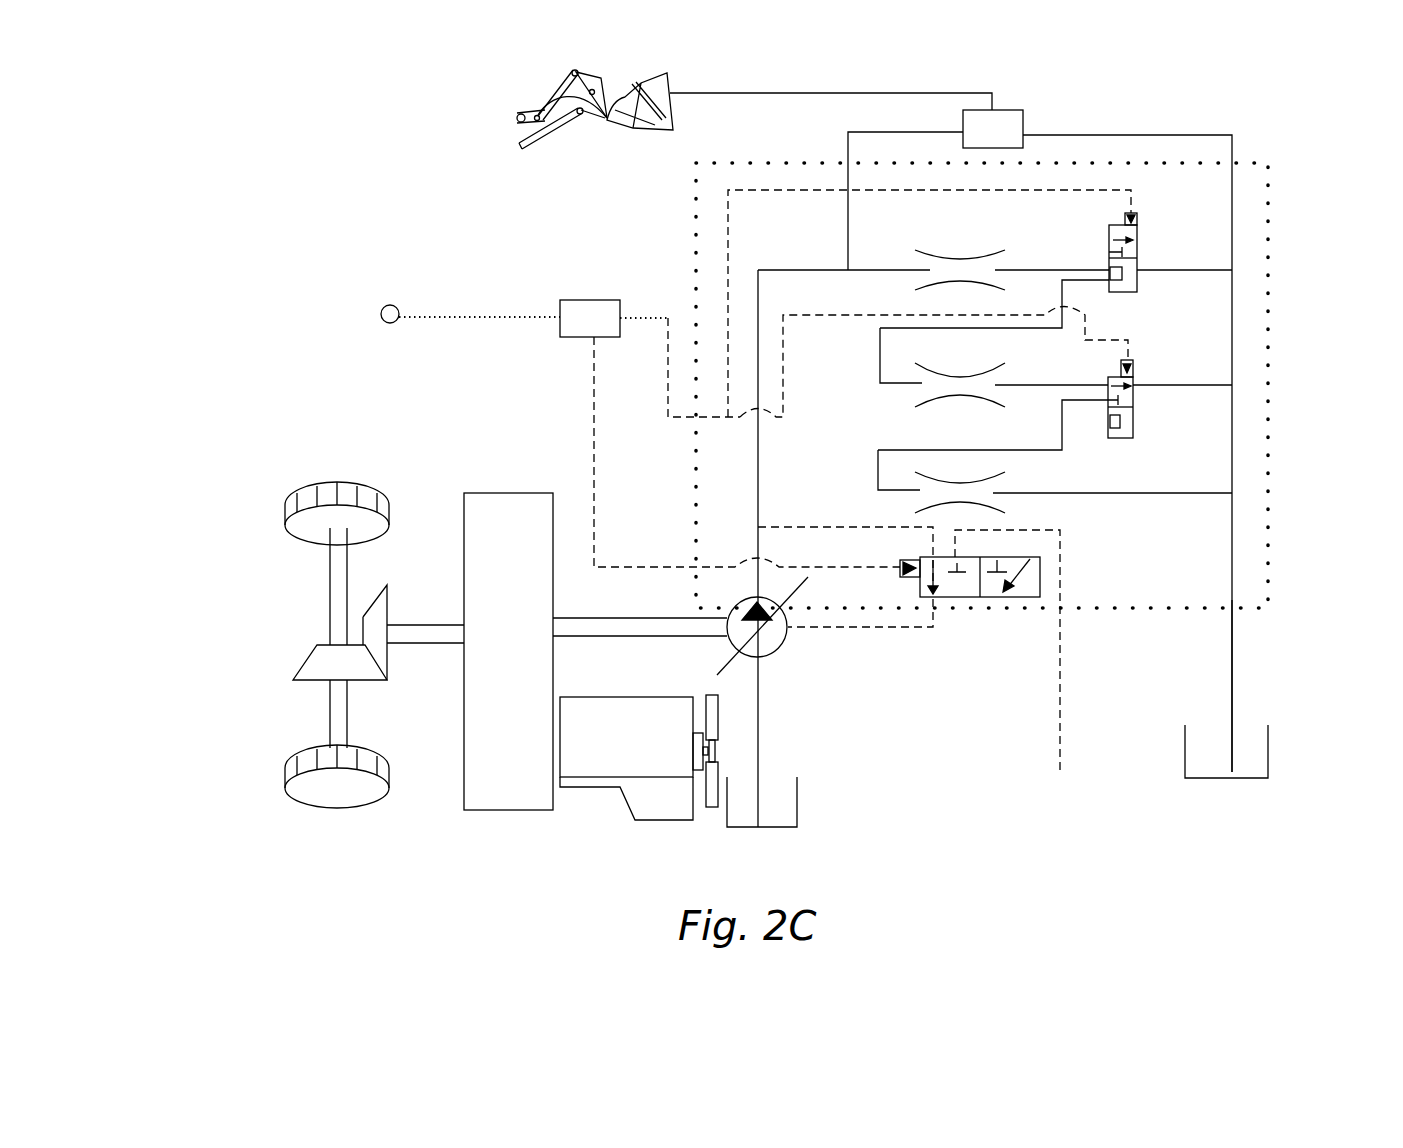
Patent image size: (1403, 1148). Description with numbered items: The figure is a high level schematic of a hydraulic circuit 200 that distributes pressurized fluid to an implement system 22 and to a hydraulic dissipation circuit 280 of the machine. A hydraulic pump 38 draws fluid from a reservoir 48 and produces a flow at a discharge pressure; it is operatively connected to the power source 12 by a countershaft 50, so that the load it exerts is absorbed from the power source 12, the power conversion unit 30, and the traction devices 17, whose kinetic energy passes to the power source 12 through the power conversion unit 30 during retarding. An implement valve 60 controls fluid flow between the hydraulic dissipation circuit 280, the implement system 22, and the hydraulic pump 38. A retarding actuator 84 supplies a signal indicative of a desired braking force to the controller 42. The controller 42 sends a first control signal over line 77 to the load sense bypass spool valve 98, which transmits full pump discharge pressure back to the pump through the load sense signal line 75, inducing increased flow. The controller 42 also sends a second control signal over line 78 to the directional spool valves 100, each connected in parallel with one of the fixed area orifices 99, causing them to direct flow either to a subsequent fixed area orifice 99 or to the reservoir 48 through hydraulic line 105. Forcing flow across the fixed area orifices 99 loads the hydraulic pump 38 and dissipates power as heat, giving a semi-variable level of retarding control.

The hydraulic circuit 200 is at (303, 175).
The implement system 22 is at (515, 123).
The implement valve 60 is at (1025, 122).
The retarding actuator 84 is at (384, 308).
The controller 42 is at (580, 300).
The line 78 is at (667, 362).
The line 77 is at (668, 565).
The power conversion unit 30 is at (495, 493).
The traction devices 17 is at (298, 545).
The power source 12 is at (641, 753).
The countershaft 50 is at (557, 715).
The hydraulic pump 38 is at (782, 647).
The reservoir 48 is at (797, 813).
The hydraulic line 105 is at (1233, 692).
The load sense signal line 75 is at (880, 628).
The load sense bypass spool valve 98 is at (962, 597).
The fixed area orifices 99 is at (965, 258).
The directional spool valves 100 is at (1140, 252).
The hydraulic dissipation circuit 280 is at (1270, 565).